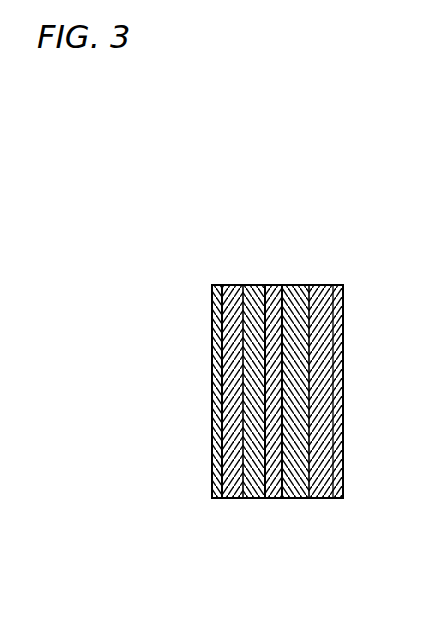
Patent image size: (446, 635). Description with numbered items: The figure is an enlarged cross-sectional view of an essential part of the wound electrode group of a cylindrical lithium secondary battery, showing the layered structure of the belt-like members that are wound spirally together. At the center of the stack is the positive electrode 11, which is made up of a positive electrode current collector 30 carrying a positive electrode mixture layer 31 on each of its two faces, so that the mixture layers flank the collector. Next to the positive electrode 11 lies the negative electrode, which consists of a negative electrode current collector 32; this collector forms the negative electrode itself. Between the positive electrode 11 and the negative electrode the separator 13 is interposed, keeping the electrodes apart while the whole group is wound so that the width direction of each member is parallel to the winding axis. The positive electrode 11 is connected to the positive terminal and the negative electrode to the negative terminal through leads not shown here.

The positive electrode 11 is at (302, 208).
The positive electrode current collector 30 is at (243, 285).
The positive electrode mixture layer 31 is at (229, 285).
The negative electrode current collector 32 is at (280, 285).
The separator 13 is at (268, 498).